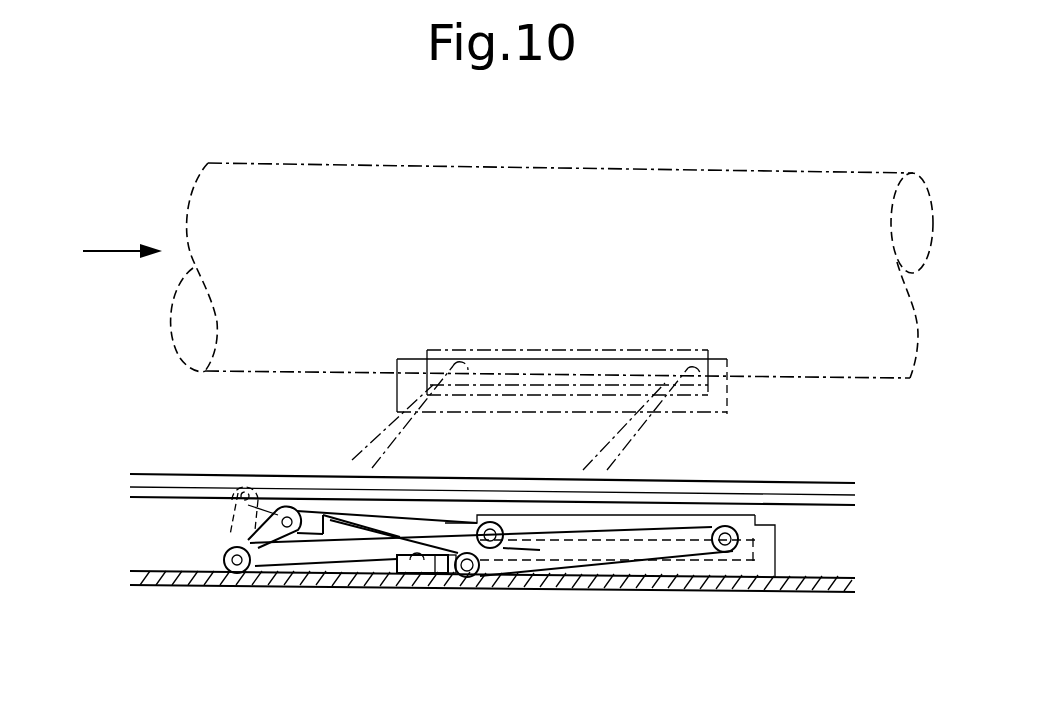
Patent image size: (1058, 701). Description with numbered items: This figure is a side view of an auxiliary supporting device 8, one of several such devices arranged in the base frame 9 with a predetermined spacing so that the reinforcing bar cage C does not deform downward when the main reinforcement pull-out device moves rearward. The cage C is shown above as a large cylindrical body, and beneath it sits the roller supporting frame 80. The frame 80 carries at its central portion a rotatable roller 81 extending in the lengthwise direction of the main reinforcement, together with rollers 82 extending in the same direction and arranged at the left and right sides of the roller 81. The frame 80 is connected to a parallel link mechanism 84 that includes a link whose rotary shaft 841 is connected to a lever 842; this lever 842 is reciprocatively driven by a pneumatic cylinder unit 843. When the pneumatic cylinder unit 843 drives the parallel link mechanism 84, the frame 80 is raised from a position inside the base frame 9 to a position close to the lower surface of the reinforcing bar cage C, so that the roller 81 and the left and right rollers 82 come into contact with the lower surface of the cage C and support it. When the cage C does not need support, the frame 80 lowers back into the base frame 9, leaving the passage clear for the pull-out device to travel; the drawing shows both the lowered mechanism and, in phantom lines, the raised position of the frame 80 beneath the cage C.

The reinforcing bar cage C is at (690, 170).
The auxiliary supporting device 8 is at (733, 403).
The roller supporting frame 80 is at (773, 570).
The rotatable roller 81 is at (707, 393).
The rollers 82 is at (637, 352).
The parallel link mechanism 84 is at (373, 437).
The rotary shaft 841 is at (236, 575).
The lever 842 is at (246, 538).
The pneumatic cylinder unit 843 is at (394, 562).
The base frame 9 is at (749, 594).